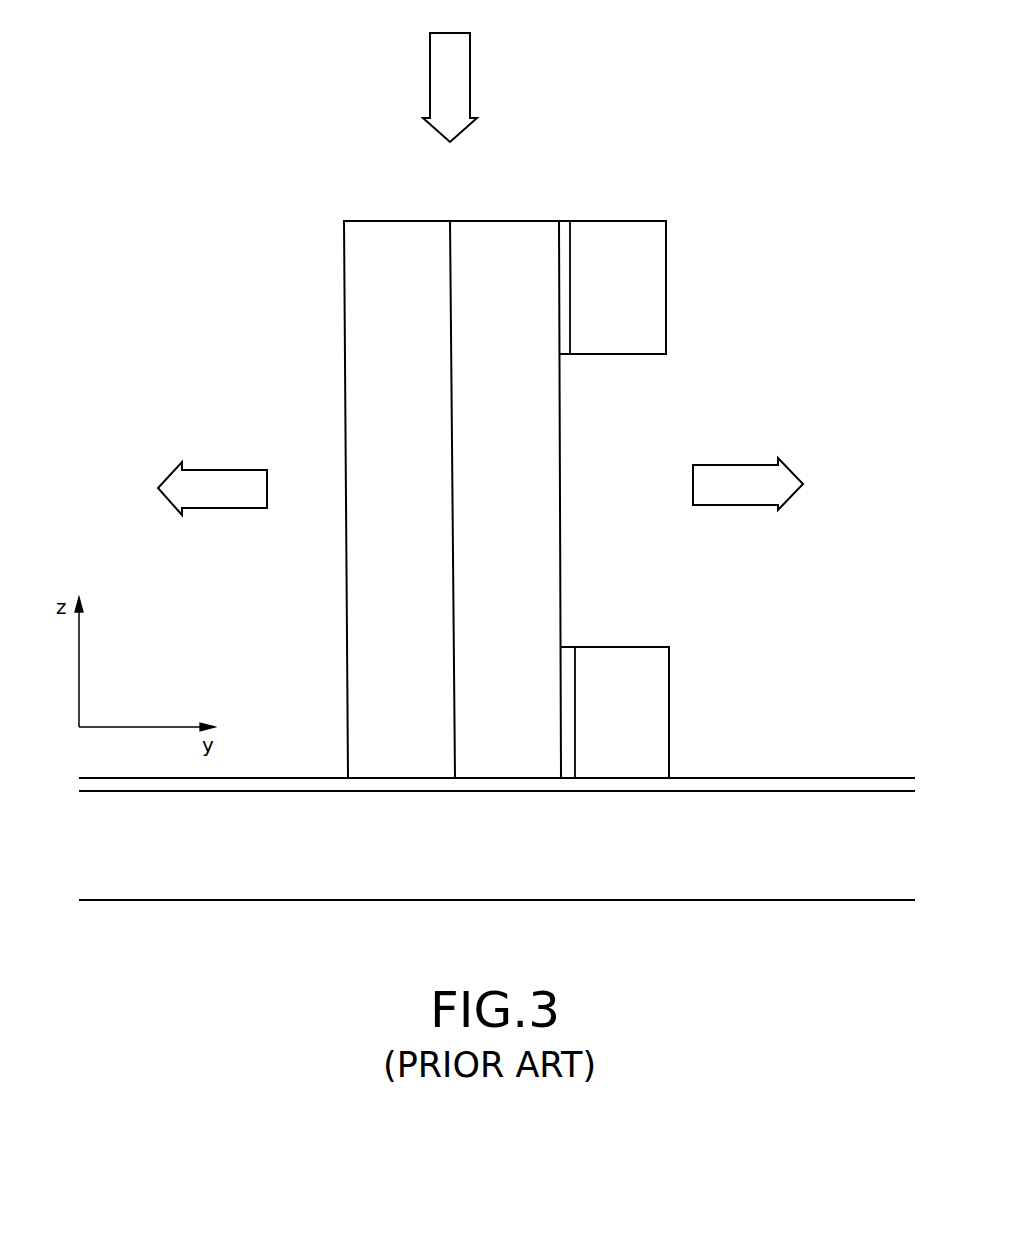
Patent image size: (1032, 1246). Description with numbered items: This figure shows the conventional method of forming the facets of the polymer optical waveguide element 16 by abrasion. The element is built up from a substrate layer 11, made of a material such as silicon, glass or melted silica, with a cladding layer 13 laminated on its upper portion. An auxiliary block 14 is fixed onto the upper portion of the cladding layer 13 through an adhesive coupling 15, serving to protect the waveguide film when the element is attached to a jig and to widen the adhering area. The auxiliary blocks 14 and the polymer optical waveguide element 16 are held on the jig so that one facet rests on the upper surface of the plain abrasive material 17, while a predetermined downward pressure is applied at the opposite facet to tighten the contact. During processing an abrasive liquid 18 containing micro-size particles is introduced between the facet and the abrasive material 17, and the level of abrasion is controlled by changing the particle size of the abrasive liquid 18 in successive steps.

The substrate layer 11 is at (362, 373).
The cladding layer 13 is at (535, 462).
The auxiliary blocks 14 is at (645, 281).
The adhesive coupling 15 is at (565, 233).
The polymer optical waveguide element 16 is at (559, 212).
The abrasive material 17 is at (867, 812).
The abrasive liquid 18 is at (806, 783).